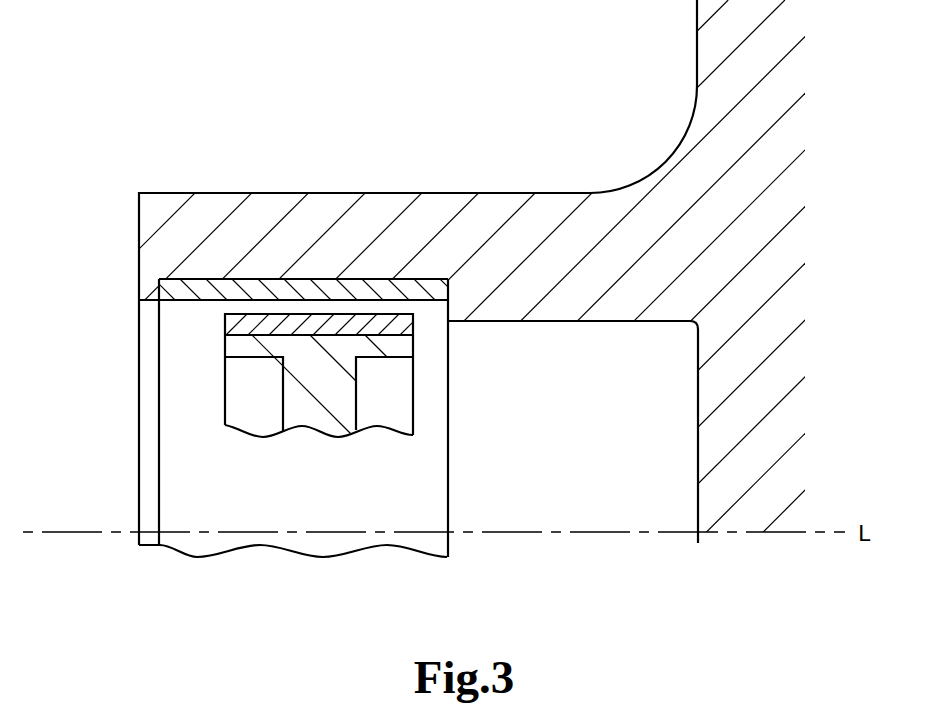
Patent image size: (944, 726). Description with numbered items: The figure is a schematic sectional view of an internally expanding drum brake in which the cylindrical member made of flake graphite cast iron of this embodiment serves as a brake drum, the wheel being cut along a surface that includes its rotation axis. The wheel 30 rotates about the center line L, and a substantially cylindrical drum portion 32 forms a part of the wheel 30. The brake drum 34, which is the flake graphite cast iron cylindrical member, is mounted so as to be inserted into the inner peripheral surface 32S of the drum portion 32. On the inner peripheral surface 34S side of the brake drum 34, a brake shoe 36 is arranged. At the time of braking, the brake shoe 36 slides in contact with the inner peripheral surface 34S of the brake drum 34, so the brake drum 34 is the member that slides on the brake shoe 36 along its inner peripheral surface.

The wheel 30 is at (718, 88).
The drum portion 32 is at (265, 205).
The inner peripheral surface of the drum portion 32S is at (173, 282).
The brake drum 34 is at (427, 483).
The inner peripheral surface of the brake drum 34S is at (435, 302).
The brake shoe 36 is at (392, 403).